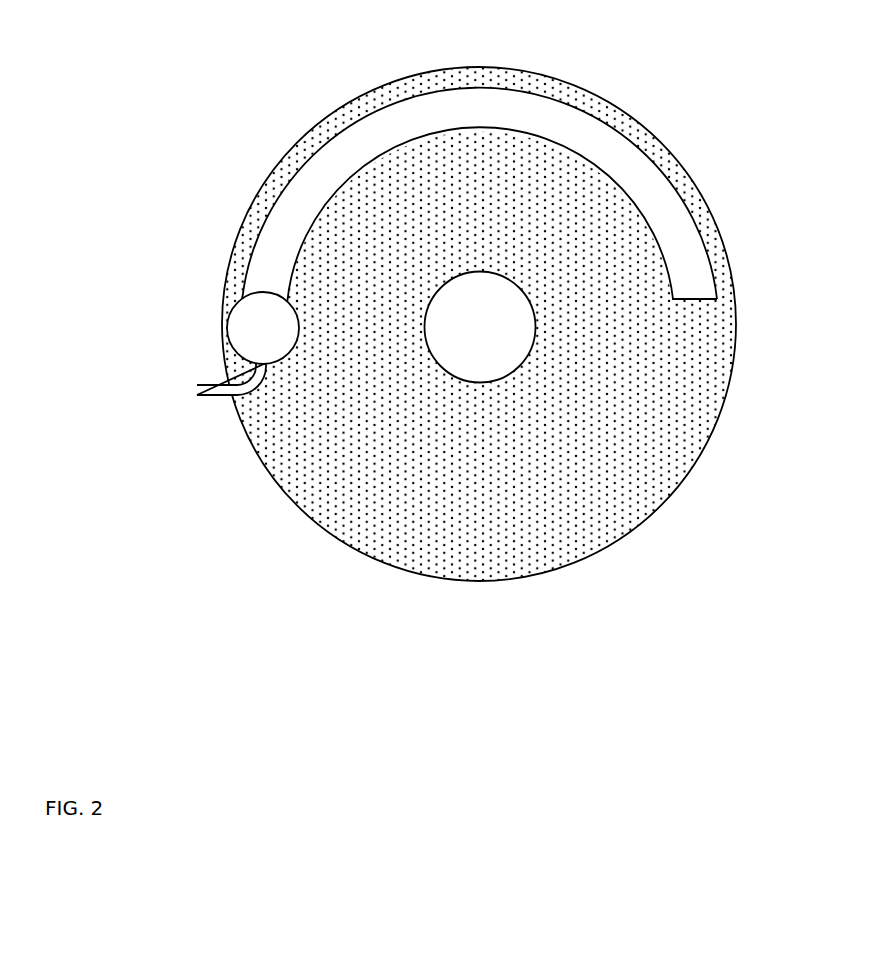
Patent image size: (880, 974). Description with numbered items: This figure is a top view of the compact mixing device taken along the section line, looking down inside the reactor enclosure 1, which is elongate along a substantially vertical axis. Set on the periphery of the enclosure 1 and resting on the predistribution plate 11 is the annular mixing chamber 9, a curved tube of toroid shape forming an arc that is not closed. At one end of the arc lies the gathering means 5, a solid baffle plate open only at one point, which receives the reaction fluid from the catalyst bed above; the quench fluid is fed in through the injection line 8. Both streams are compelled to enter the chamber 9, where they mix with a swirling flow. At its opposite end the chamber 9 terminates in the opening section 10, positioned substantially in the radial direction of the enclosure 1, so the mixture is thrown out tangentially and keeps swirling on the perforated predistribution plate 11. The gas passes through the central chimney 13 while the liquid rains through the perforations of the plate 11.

The enclosure 1 is at (489, 581).
The gathering means 5 is at (235, 328).
The injection line 8 is at (215, 388).
The annular mixing chamber 9 is at (682, 212).
The opening section 10 is at (688, 300).
The predistribution plate 11 is at (648, 493).
The central chimney 13 is at (517, 346).